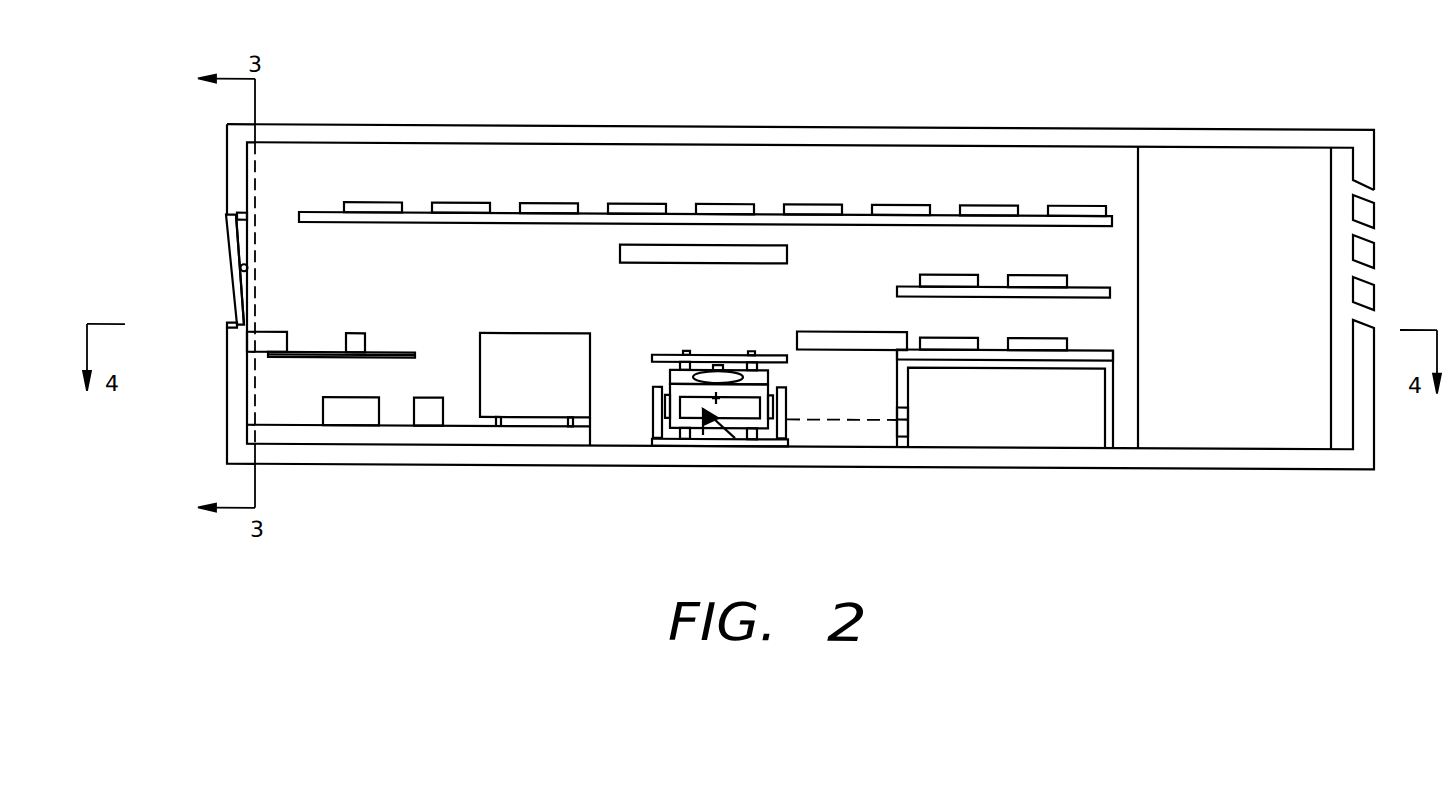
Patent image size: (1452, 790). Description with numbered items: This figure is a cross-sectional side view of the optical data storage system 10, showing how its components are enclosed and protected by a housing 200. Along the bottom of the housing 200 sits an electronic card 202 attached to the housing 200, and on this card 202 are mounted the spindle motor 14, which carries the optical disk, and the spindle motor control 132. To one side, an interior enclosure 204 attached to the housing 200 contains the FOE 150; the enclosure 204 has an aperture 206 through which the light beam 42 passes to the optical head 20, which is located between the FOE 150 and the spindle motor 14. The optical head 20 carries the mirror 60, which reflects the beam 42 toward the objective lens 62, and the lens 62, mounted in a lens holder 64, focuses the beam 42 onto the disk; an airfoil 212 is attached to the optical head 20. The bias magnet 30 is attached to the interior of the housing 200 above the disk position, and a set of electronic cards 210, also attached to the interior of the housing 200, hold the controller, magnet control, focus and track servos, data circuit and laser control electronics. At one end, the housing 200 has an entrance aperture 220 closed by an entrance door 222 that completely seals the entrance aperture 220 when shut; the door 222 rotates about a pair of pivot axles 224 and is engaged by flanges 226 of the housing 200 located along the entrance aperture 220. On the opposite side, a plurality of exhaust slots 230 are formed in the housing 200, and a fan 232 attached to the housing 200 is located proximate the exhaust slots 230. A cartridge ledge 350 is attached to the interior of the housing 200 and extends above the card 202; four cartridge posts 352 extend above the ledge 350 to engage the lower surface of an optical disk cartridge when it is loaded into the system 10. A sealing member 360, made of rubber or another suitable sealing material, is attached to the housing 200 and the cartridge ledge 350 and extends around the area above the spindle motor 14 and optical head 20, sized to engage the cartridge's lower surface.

The optical data storage system 10 is at (580, 557).
The spindle motor 14 is at (546, 378).
The optical head 20 is at (768, 442).
The bias magnet 30 is at (620, 252).
The light beam 42 is at (850, 420).
The mirror 60 is at (712, 438).
The objective lens 62 is at (727, 368).
The lens holder 64 is at (771, 377).
The spindle motor control 132 is at (413, 405).
The FOE 150 is at (1084, 403).
The housing 200 is at (388, 124).
The electronic card 202 is at (290, 426).
The interior enclosure 204 is at (1114, 421).
The aperture 206 is at (909, 421).
The electronic cards 210 is at (1102, 346).
The airfoil 212 is at (662, 353).
The entrance aperture 220 is at (227, 243).
The entrance door 222 is at (233, 285).
The pivot axles 224 is at (247, 271).
The flanges 226 is at (237, 214).
The exhaust slots 230 is at (1375, 197).
The fan 232 is at (1244, 309).
The cartridge ledge 350 is at (400, 352).
The cartridge posts 352 is at (356, 333).
The sealing member 360 is at (287, 332).